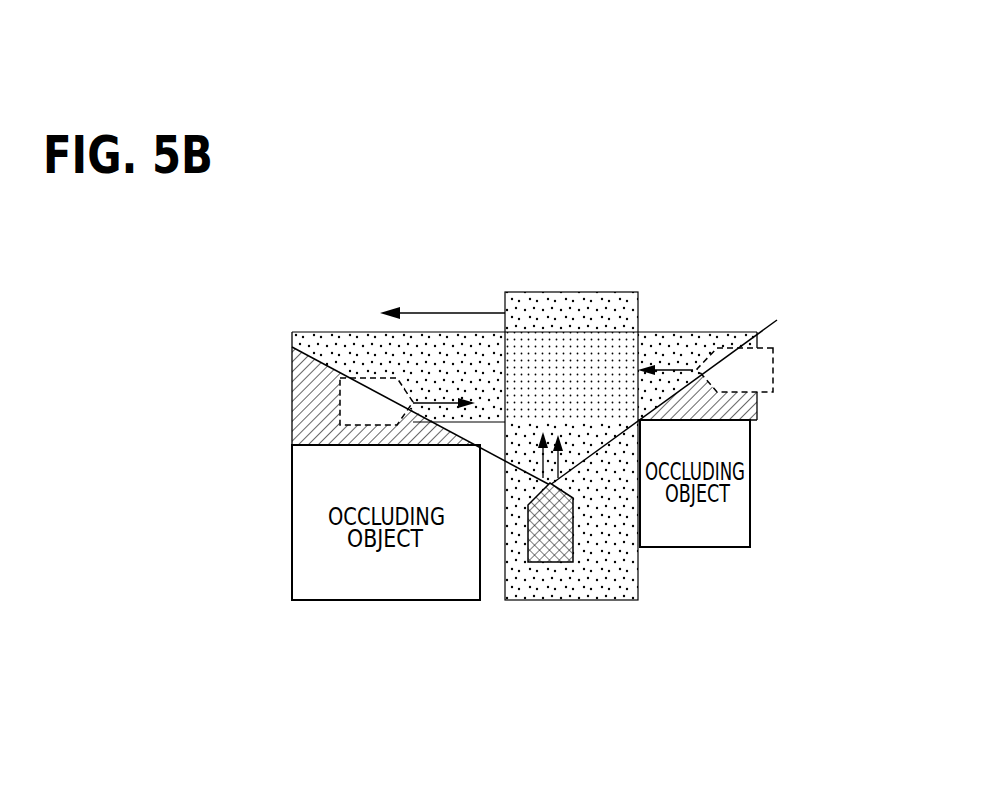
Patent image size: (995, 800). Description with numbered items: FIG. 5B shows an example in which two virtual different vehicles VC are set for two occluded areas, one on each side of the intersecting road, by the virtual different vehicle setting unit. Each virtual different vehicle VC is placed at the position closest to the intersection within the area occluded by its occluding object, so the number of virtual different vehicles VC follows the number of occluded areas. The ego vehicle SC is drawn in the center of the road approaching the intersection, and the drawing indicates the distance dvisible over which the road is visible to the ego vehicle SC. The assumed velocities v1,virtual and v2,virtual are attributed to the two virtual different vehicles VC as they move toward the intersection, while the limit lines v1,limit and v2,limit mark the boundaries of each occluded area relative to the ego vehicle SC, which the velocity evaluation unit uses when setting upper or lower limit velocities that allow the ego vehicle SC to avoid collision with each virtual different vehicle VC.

The virtual different vehicle VC is at (373, 388).
The ego vehicle SC is at (552, 547).
The first limit line of visibility v1,limit is at (545, 463).
The second limit line of visibility v2,limit is at (560, 462).
The first virtual camera velocity v1,virtual is at (446, 388).
The second virtual camera velocity v2,virtual is at (672, 370).
The visible distance dvisible is at (442, 298).